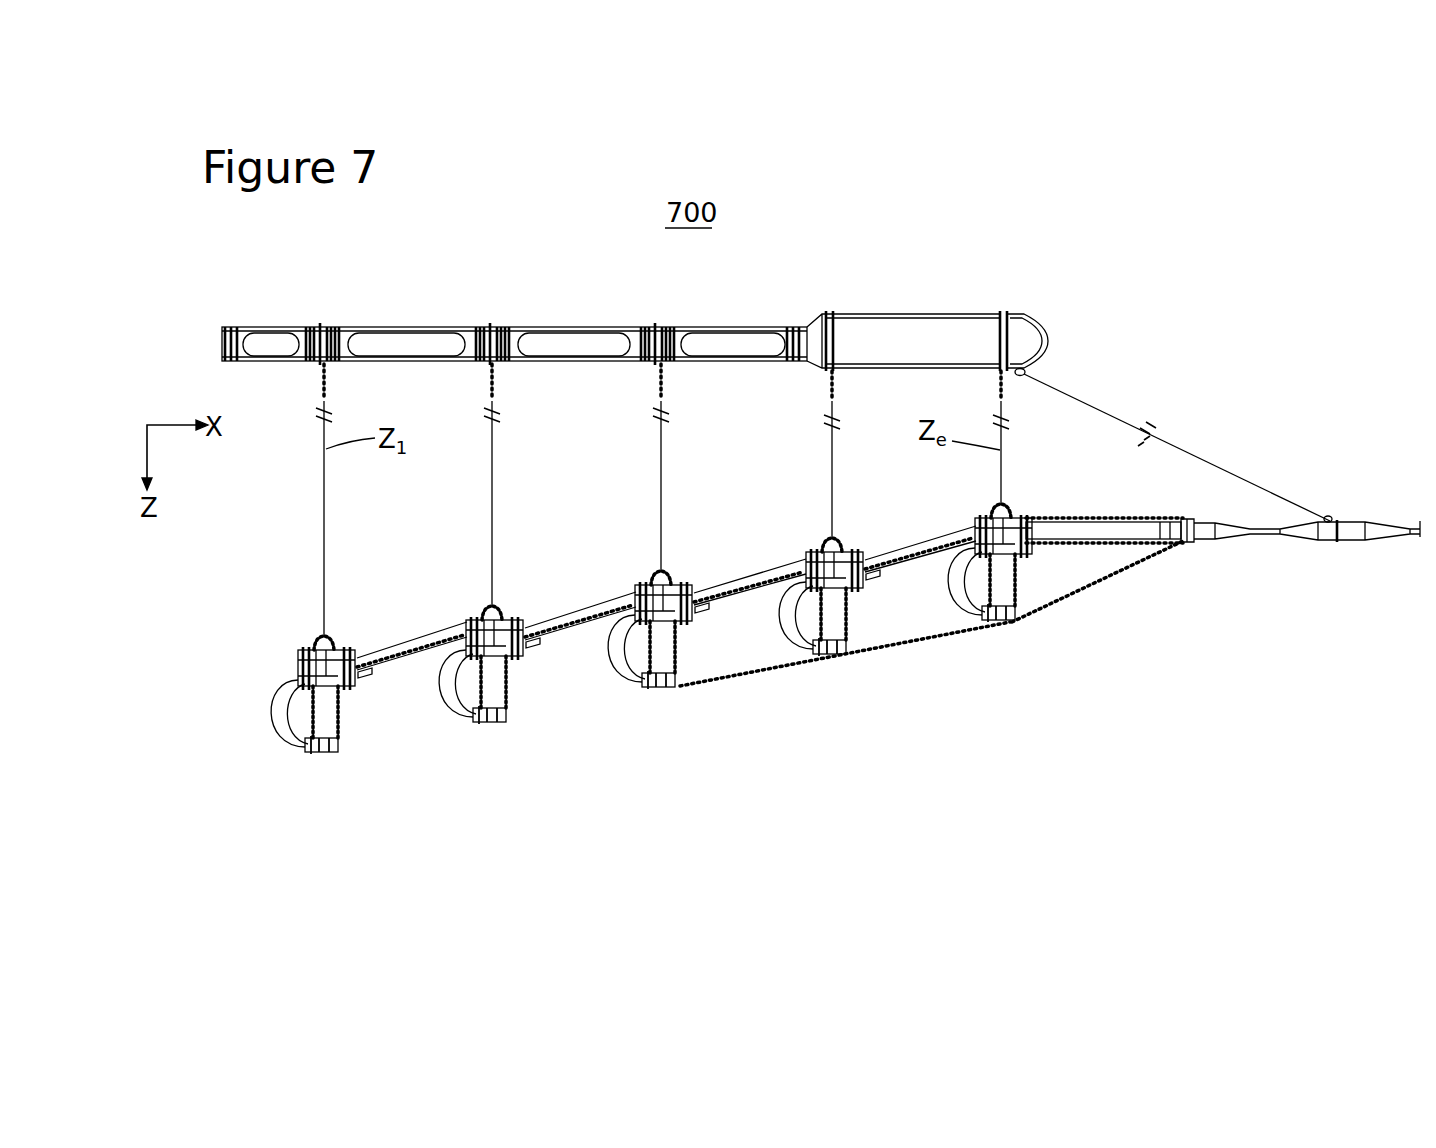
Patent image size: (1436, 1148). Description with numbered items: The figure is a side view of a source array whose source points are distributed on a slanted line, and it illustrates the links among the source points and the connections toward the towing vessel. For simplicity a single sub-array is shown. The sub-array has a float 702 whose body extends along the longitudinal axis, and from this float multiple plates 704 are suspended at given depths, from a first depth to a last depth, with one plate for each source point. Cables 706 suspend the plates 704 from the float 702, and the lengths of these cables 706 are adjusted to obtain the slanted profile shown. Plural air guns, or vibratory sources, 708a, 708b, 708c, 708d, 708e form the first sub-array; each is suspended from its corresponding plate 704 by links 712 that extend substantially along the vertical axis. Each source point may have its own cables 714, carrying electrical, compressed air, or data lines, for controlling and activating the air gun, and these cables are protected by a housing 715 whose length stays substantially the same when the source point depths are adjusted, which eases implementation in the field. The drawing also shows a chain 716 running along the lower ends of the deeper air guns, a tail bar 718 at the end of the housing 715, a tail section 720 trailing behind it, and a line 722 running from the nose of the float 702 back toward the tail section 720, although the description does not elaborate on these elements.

The float 702 is at (600, 345).
The plate 704 is at (340, 646).
The cable 706 is at (663, 452).
The air gun 708a is at (325, 755).
The air gun 708b is at (495, 722).
The air gun 708c is at (665, 690).
The air gun 708d is at (832, 656).
The air gun 708e is at (998, 625).
The link 712 is at (340, 722).
The cable 714 is at (272, 698).
The housing 715 is at (728, 580).
The chain 716 is at (736, 672).
The tail bar 718 is at (1070, 516).
The tail section 720 is at (1305, 542).
The tow line 722 is at (1080, 398).